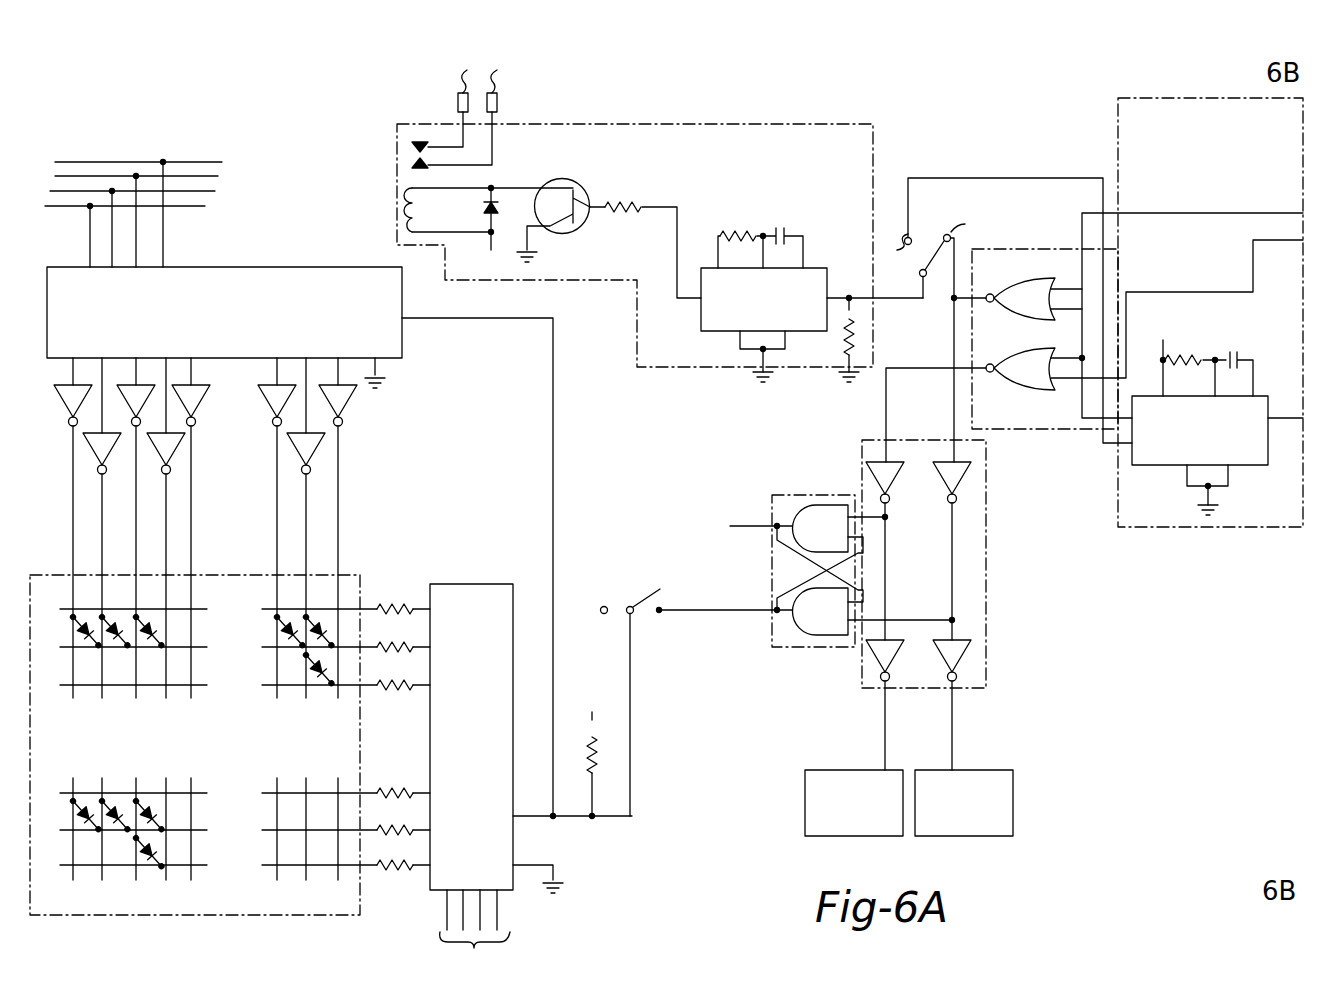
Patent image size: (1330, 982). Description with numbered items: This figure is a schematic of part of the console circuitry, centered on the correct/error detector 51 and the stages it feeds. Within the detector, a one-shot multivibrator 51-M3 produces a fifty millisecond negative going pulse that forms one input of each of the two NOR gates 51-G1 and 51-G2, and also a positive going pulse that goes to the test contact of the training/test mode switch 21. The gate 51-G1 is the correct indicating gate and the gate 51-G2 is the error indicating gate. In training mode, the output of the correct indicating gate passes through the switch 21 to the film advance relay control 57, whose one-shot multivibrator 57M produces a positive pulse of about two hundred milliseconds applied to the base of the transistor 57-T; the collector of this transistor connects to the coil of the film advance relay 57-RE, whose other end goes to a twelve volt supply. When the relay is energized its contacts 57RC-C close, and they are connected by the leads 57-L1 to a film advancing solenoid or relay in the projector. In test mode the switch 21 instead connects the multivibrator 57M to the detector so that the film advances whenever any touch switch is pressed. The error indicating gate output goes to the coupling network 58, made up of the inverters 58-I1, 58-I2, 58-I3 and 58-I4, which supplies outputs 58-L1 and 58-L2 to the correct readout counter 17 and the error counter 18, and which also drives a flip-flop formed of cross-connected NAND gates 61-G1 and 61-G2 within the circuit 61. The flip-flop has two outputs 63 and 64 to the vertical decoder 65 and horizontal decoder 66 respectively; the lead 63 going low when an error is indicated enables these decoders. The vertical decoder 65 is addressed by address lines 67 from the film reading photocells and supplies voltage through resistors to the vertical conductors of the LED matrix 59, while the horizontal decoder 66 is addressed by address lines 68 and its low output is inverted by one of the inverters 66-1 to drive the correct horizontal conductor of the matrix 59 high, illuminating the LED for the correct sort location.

The address lines 68 is at (226, 152).
The horizontal decoder 66 is at (67, 267).
The inverters 66-1 is at (352, 392).
The flip-flop output 64 is at (553, 481).
The LED matrix 59 is at (351, 575).
The vertical decoder 65 is at (468, 584).
The address lines 67 is at (476, 928).
The flip-flop output lead 63 is at (684, 620).
The film advance relay control 57 is at (795, 123).
The leads 57-L1 is at (465, 107).
The relay contacts 57RC-C is at (411, 152).
The film advance relay 57-RE is at (454, 230).
The transistor 57-T is at (585, 180).
The one-shot multivibrator 57M is at (812, 267).
The training/test mode switch 21 is at (947, 215).
The correct/error detector 51 is at (1197, 535).
The NOR gate 51-G1 is at (1034, 299).
The NOR gate 51-G2 is at (1094, 337).
The one-shot multivibrator 51-M3 is at (1268, 455).
The coupling network 58 is at (990, 582).
The inverter 58-I1 is at (866, 466).
The inverter 58-I2 is at (968, 478).
The inverter 58-I3 is at (872, 663).
The inverter 58-I4 is at (962, 660).
The output lead 58-L1 is at (952, 731).
The output lead 58-L2 is at (885, 727).
The flip-flop circuit 61 is at (780, 495).
The NAND gate 61-G1 is at (807, 557).
The NAND gate 61-G2 is at (864, 611).
The error counter 18 is at (805, 803).
The correct readout counter 17 is at (1013, 800).